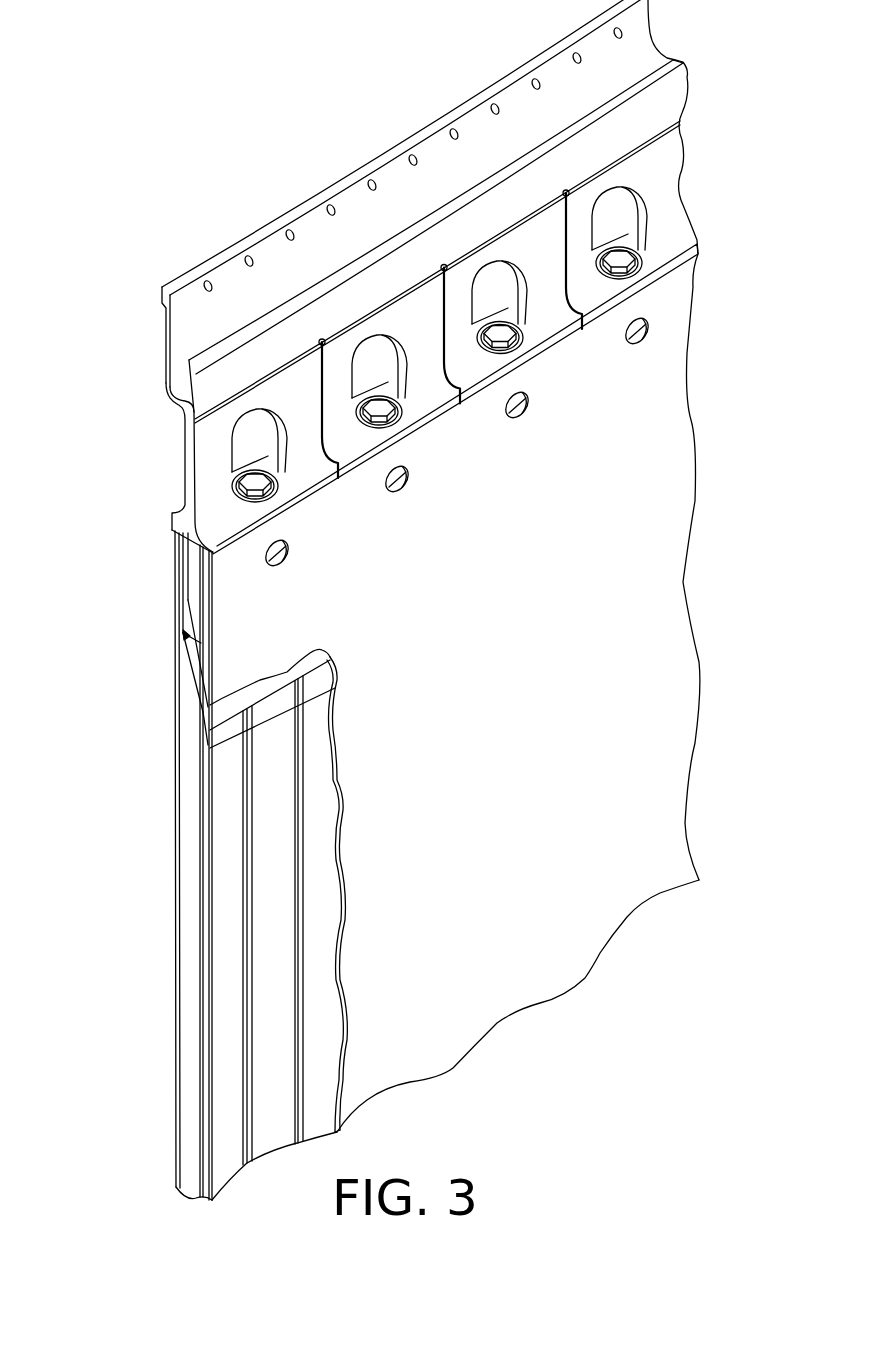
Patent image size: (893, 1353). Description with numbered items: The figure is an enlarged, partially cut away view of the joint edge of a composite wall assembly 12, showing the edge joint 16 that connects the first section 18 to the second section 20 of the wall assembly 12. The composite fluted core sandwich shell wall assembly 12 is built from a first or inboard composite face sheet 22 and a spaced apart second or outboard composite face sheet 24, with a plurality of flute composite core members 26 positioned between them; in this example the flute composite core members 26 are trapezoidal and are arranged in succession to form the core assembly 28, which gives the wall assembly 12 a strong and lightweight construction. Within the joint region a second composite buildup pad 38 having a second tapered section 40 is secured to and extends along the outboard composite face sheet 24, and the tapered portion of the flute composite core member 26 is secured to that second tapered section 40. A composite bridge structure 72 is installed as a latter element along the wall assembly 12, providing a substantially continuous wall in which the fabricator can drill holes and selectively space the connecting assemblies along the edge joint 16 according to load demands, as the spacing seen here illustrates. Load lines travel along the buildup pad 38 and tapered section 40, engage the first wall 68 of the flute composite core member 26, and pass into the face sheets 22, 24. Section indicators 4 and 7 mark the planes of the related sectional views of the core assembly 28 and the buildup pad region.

The wall assembly 12 is at (578, 151).
The edge joint 16 is at (120, 482).
The first section 18 is at (620, 465).
The second section 20 is at (675, 78).
The first or inboard composite face sheet 22 is at (176, 1015).
The second or outboard composite face sheet 24 is at (443, 1000).
The flute composite core member 26 is at (228, 1135).
The core assembly 28 is at (338, 893).
The second composite buildup pad 38 is at (208, 745).
The second tapered section 40 is at (208, 717).
The first wall 68 is at (193, 670).
The composite bridge structure 72 is at (190, 597).
The section line 4- 4 is at (228, 795).
The section line 7- 7 is at (140, 517).